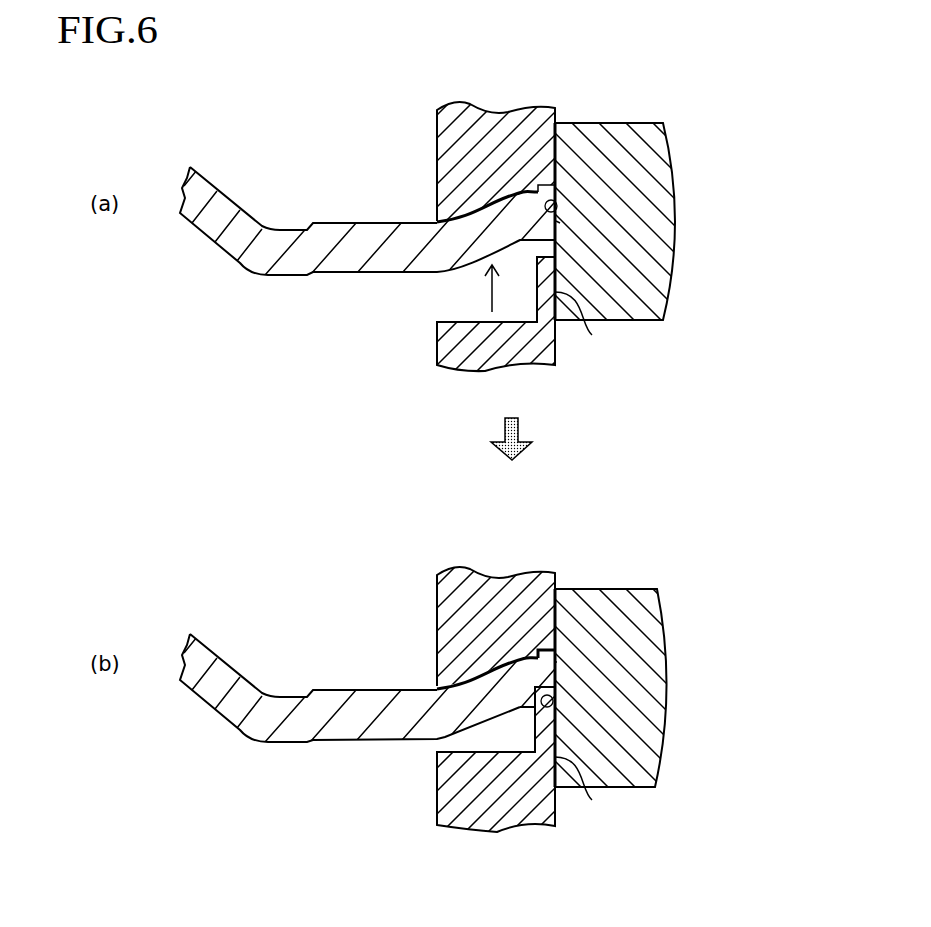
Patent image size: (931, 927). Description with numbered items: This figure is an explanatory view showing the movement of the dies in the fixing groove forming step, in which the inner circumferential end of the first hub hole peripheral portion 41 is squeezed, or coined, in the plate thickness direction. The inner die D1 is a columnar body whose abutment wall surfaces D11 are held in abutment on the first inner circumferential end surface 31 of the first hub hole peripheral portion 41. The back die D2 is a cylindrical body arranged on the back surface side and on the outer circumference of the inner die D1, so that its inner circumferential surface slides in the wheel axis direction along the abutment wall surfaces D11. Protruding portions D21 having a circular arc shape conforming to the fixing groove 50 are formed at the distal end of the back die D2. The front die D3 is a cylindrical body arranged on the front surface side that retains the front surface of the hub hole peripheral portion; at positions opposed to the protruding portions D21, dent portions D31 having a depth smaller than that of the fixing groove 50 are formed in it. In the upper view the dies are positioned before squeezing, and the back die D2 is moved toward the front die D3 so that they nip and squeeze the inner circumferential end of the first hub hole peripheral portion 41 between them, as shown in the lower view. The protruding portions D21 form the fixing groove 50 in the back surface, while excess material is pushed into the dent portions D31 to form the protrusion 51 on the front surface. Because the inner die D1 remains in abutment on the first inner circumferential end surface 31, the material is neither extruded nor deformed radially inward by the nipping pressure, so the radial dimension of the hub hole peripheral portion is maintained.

The first hub hole peripheral portion 41 is at (370, 222).
The inner die D1 is at (628, 123).
The abutment wall surfaces D11 is at (556, 218).
The back die D2 is at (437, 340).
The protruding portions D21 is at (592, 335).
The front die D3 is at (477, 110).
The dent portions D31 is at (556, 186).
The first inner circumferential end surface 31 is at (560, 223).
The fixing groove 50 is at (534, 721).
The protrusion 51 is at (547, 650).